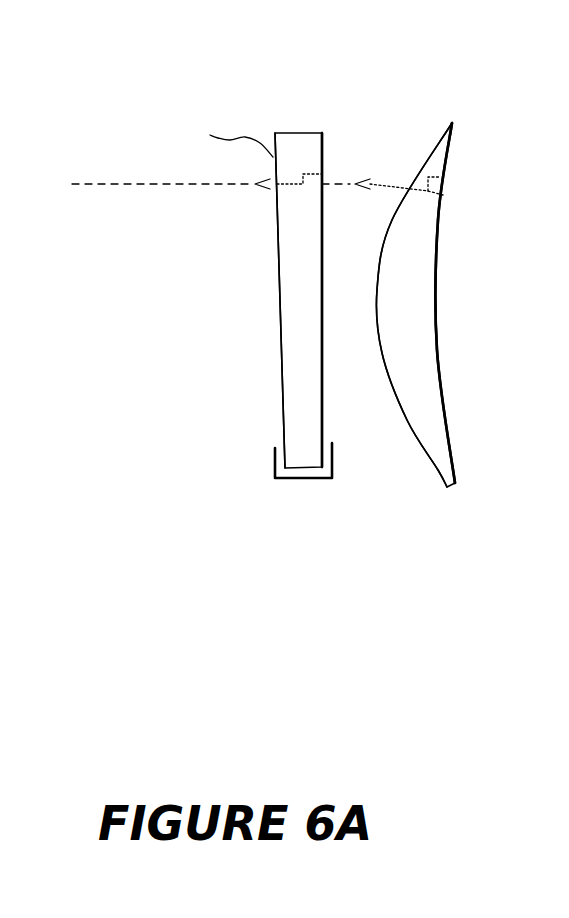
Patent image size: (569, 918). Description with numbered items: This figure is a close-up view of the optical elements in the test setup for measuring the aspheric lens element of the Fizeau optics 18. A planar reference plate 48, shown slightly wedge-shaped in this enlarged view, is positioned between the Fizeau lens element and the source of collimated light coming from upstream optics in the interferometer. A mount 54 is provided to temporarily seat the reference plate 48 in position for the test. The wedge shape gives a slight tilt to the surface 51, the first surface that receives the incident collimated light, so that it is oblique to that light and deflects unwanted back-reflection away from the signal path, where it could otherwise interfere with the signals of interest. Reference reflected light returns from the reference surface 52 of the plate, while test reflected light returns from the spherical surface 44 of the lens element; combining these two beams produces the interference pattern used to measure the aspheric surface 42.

The Fizeau optics 18 is at (452, 123).
The aspheric surface 42 is at (412, 163).
The spherical surface 44 is at (437, 350).
The planar reference plate 48 is at (302, 133).
The first surface 51 is at (282, 368).
The reference surface 52 is at (325, 427).
The mount 54 is at (272, 467).